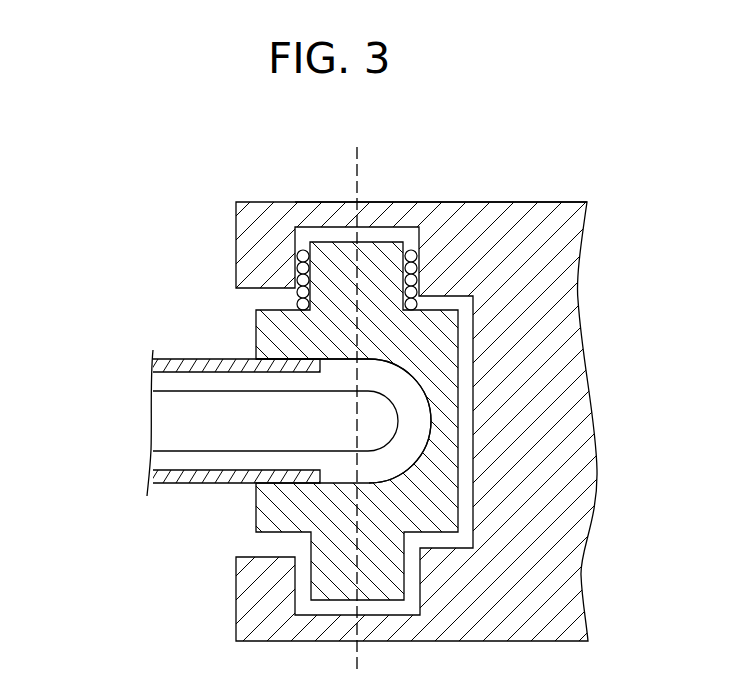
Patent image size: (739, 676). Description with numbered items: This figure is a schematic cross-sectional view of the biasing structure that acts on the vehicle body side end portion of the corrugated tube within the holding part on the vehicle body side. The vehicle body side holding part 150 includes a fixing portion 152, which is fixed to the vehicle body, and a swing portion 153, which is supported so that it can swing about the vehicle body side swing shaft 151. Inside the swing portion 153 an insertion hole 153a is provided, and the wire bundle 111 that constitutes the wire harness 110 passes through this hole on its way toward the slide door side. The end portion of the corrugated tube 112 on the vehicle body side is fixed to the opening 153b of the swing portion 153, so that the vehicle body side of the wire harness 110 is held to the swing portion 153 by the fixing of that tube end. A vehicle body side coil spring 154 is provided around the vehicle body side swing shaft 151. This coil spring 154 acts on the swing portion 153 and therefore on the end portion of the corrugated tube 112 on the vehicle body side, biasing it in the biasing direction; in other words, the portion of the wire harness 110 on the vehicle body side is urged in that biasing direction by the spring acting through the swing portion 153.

The wire harness 110 is at (353, 398).
The wire bundle 111 is at (392, 402).
The corrugated tube 112 is at (177, 358).
The vehicle body side holding part 150 is at (607, 182).
The vehicle body side swing shaft 151 is at (353, 157).
The fixing portion 152 is at (501, 202).
The swing portion 153 is at (257, 322).
The insertion hole 153a is at (432, 421).
The opening 153b is at (240, 358).
The vehicle body side coil spring 154 is at (411, 249).